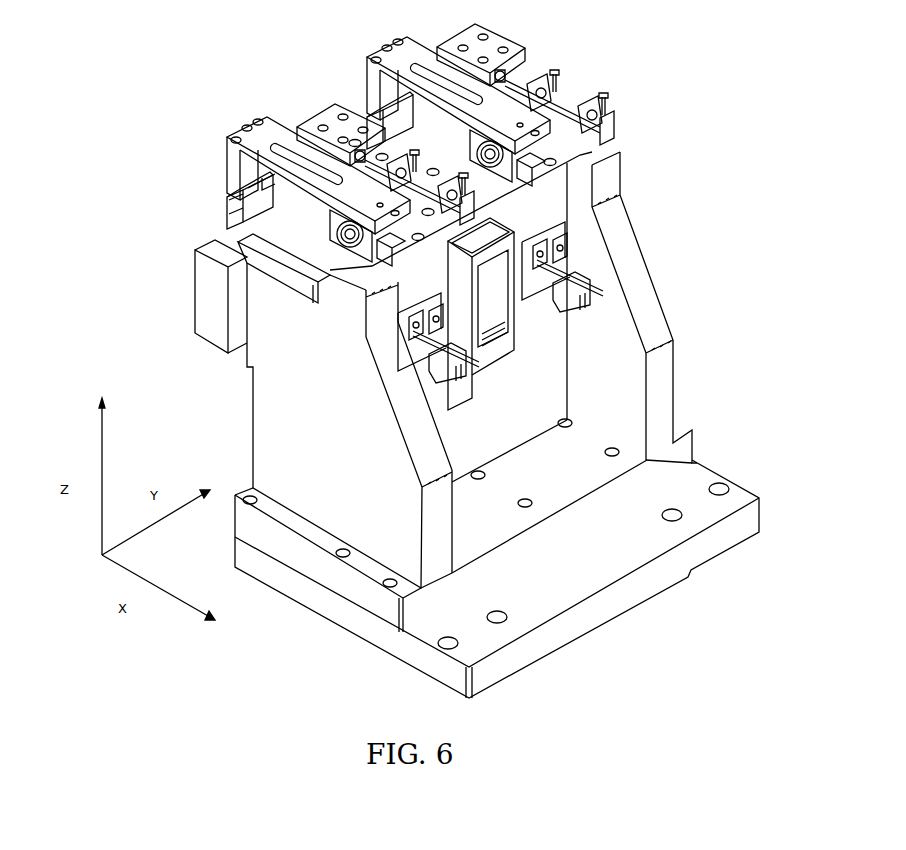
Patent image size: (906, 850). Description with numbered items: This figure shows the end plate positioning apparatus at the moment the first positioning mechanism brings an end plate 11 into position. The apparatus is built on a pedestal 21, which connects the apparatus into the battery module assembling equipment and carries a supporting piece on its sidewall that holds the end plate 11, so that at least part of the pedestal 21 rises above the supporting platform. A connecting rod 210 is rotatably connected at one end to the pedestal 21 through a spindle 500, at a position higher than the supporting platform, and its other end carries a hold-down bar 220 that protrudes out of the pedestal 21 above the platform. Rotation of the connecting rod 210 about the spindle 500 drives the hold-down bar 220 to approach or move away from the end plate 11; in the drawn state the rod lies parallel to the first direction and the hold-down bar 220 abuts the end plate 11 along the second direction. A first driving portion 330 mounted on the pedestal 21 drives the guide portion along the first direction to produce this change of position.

The end plate 11 is at (208, 293).
The pedestal 21 is at (612, 385).
The connecting rod 210 is at (263, 137).
The hold-down bar 220 is at (232, 213).
The first driving portion 330 is at (555, 100).
The spindle 500 is at (530, 170).